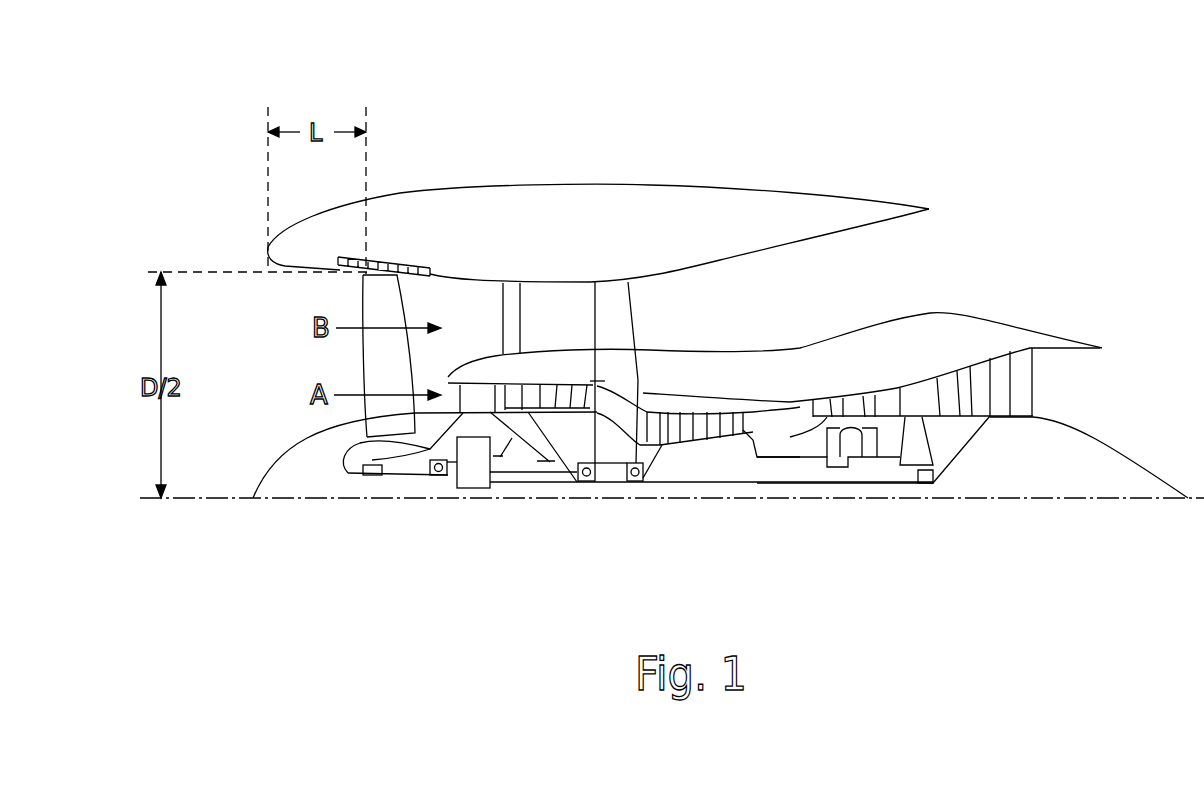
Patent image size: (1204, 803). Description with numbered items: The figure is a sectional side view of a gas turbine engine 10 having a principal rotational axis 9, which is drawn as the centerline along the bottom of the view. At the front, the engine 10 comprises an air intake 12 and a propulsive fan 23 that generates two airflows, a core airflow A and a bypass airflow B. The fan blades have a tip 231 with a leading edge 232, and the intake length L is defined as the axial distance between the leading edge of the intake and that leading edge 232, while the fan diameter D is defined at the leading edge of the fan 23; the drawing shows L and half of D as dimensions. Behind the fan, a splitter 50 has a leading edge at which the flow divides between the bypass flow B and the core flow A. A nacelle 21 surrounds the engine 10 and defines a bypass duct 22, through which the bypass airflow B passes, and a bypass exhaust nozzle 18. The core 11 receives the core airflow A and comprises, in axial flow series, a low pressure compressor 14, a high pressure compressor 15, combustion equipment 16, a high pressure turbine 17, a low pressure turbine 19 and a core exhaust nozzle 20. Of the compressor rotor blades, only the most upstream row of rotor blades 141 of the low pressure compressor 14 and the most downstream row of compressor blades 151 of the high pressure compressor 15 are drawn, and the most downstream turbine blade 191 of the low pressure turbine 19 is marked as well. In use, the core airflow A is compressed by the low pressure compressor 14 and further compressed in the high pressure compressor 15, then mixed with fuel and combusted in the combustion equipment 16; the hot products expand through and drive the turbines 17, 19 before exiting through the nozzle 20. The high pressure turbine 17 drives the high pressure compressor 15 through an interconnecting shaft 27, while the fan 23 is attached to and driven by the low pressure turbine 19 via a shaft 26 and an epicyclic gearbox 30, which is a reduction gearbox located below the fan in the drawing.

The principal rotational axis 9 is at (1064, 500).
The gas turbine engine 10 is at (452, 185).
The core 11 is at (802, 389).
The air intake 12 is at (328, 307).
The low pressure compressor 14 is at (550, 393).
The most upstream row of rotor blades of the low pressure compressor 141 is at (512, 395).
The high pressure compressor 15 is at (707, 415).
The most downstream row of compressor blades of the high pressure compressor 151 is at (733, 413).
The combustion equipment 16 is at (787, 427).
The high pressure turbine 17 is at (857, 395).
The bypass exhaust nozzle 18 is at (1041, 203).
The low pressure turbine 19 is at (1000, 382).
The most downstream turbine blade 191 is at (1022, 370).
The core exhaust nozzle 20 is at (1075, 393).
The nacelle 21 is at (612, 198).
The bypass duct 22 is at (893, 261).
The propulsive fan 23 is at (370, 383).
The tip of the fan blades 231 is at (378, 266).
The leading edge of the fan blade tip 232 is at (360, 363).
The shaft 26 is at (667, 483).
The interconnecting shaft 27 is at (740, 467).
The epicyclic gearbox 30 is at (473, 472).
The splitter 50 is at (448, 377).